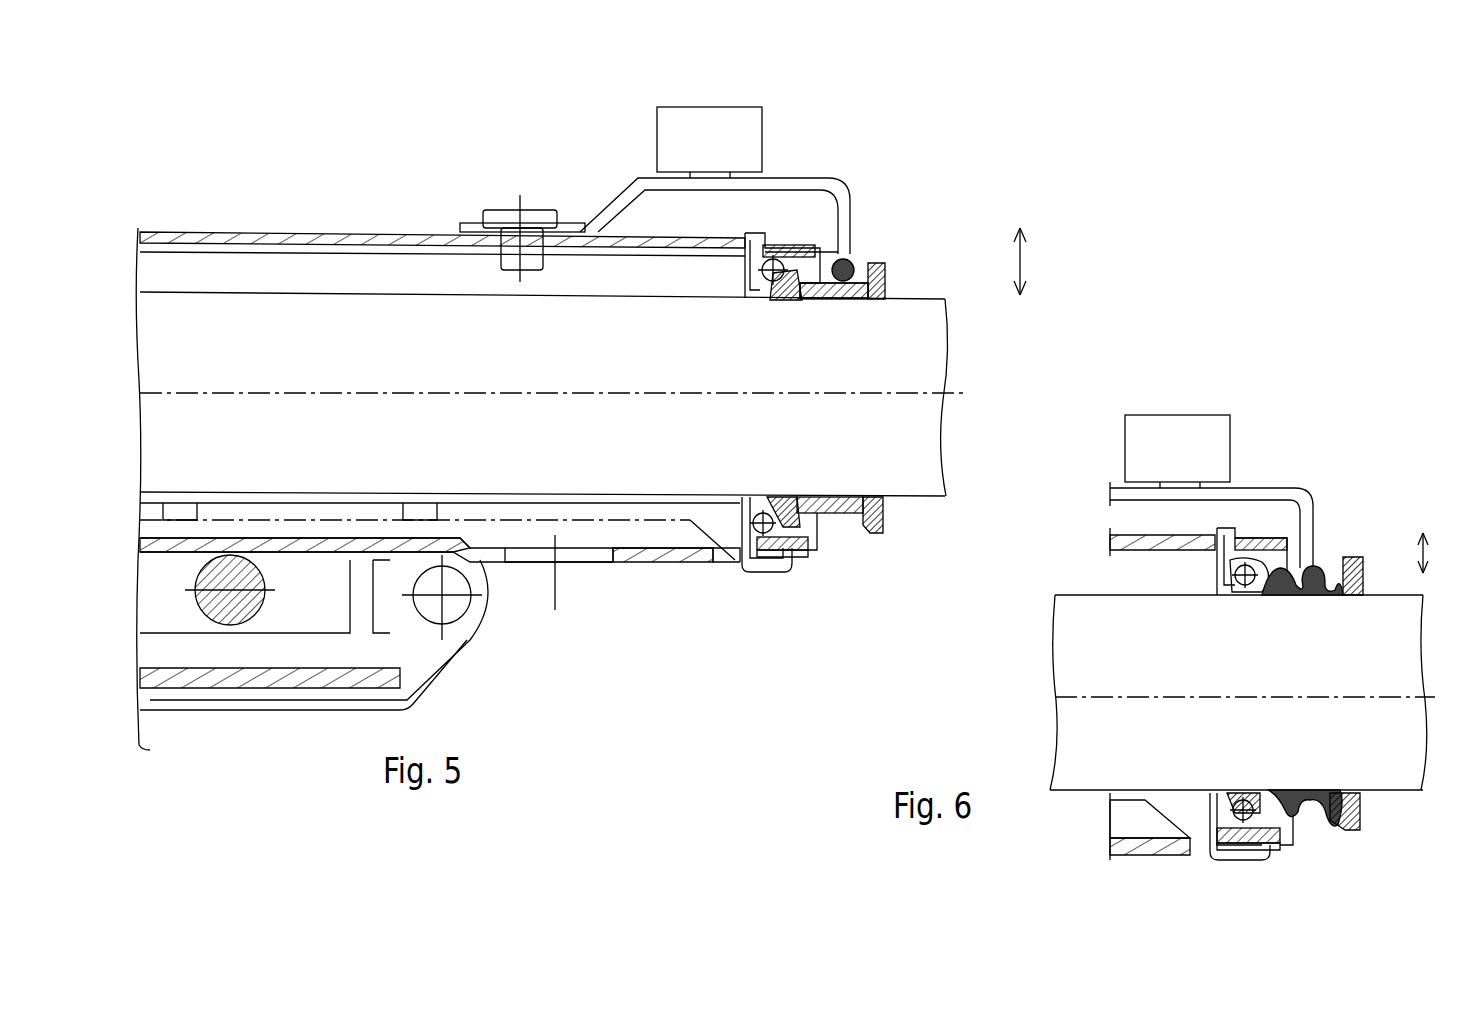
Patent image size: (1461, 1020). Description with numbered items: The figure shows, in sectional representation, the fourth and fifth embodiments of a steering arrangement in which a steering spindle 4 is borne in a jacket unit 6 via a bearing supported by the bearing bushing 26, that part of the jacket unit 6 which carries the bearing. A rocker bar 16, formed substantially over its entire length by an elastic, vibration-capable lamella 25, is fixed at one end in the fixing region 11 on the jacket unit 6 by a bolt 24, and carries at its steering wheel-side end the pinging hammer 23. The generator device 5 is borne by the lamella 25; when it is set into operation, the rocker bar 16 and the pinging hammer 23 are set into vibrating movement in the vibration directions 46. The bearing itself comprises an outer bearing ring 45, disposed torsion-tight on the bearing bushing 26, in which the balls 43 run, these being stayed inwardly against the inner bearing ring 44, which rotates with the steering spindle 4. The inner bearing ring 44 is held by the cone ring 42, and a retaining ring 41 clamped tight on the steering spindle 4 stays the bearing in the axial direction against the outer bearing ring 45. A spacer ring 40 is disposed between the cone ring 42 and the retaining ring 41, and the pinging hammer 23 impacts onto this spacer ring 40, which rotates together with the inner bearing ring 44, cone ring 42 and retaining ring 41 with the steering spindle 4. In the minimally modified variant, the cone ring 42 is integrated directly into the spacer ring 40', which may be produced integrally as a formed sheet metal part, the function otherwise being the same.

In FIG. 5, the steering spindle 4 is at (355, 318).
In FIG. 6, the steering spindle 4 is at (1088, 770).
In FIG. 5, the generator device 5 is at (672, 157).
In FIG. 6, the generator device 5 is at (1207, 428).
In FIG. 5, the jacket unit 6 is at (296, 238).
In FIG. 5, the fixing region 11 is at (463, 207).
In FIG. 5, the rocker bar 16 is at (600, 212).
In FIG. 6, the rocker bar 16 is at (1262, 492).
In FIG. 5, the pinging hammer 23 is at (852, 268).
In FIG. 6, the pinging hammer 23 is at (1323, 577).
In FIG. 5, the bolt 24 is at (506, 225).
In FIG. 5, the lamella 25 is at (770, 182).
In FIG. 6, the lamella 25 is at (1240, 497).
In FIG. 5, the bearing bushing 26 is at (787, 250).
In FIG. 6, the bearing bushing 26 is at (1260, 542).
In FIG. 5, the spacer ring 40 is at (887, 435).
In FIG. 6, the spacer ring 40' is at (1335, 856).
In FIG. 5, the retaining ring 41 is at (882, 290).
In FIG. 6, the retaining ring 41 is at (1352, 560).
In FIG. 5, the cone ring 42 is at (838, 258).
In FIG. 5, the balls 43 is at (766, 522).
In FIG. 6, the balls 43 is at (1240, 815).
In FIG. 5, the inner bearing ring 44 is at (738, 528).
In FIG. 6, the inner bearing ring 44 is at (1210, 827).
In FIG. 5, the outer bearing ring 45 is at (803, 553).
In FIG. 6, the outer bearing ring 45 is at (1273, 847).
In FIG. 5, the vibration directions 46 is at (1047, 261).
In FIG. 6, the vibration directions 46 is at (1420, 533).